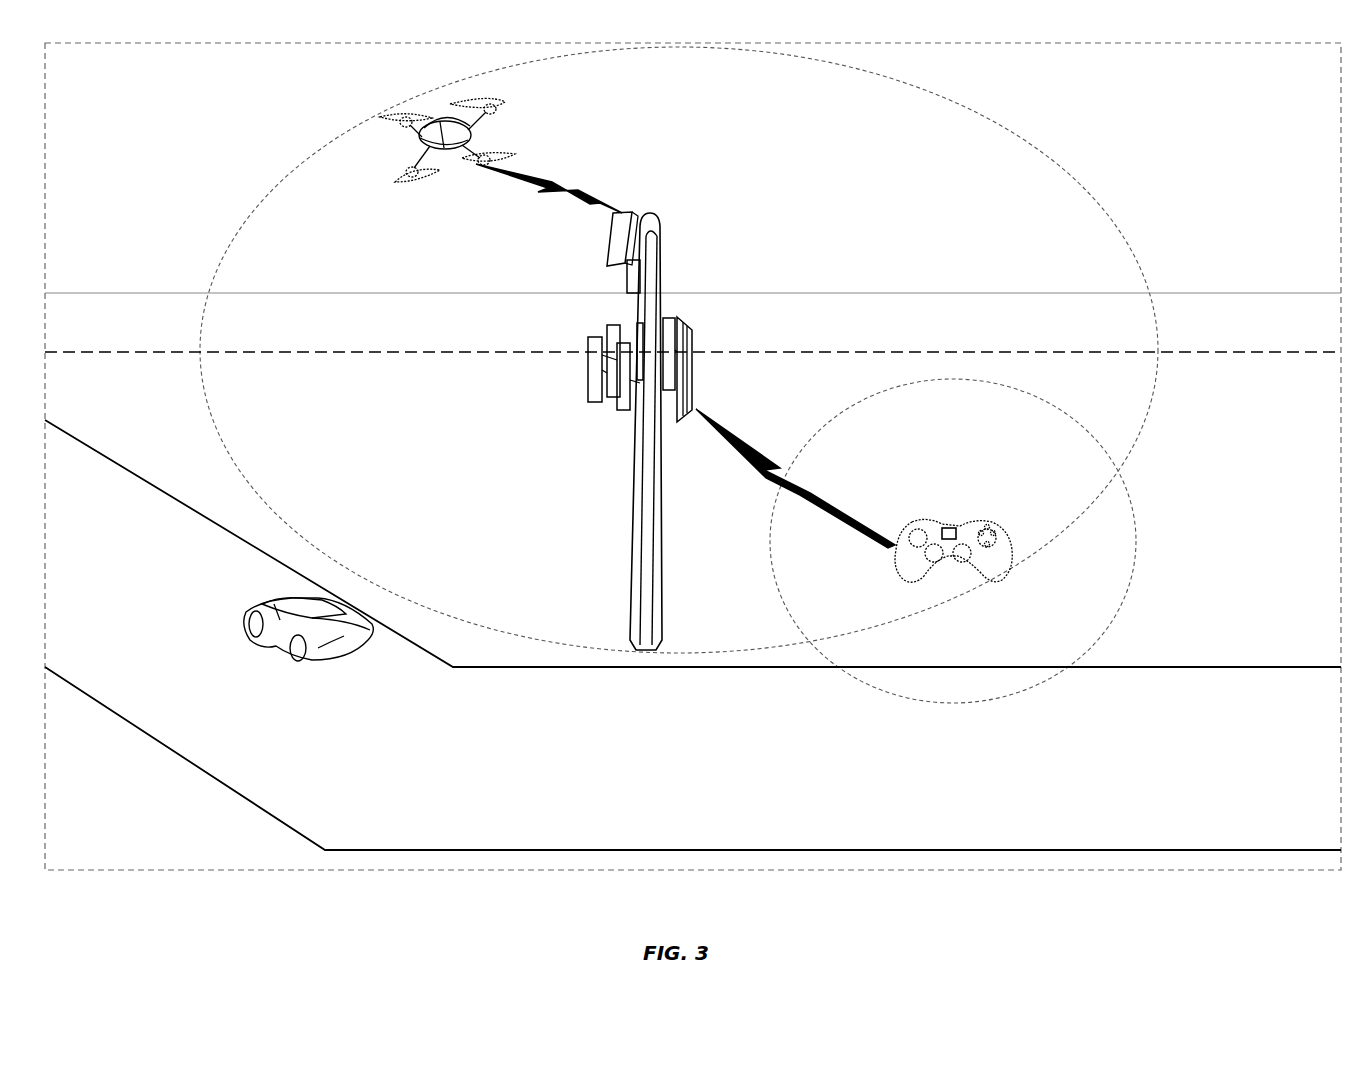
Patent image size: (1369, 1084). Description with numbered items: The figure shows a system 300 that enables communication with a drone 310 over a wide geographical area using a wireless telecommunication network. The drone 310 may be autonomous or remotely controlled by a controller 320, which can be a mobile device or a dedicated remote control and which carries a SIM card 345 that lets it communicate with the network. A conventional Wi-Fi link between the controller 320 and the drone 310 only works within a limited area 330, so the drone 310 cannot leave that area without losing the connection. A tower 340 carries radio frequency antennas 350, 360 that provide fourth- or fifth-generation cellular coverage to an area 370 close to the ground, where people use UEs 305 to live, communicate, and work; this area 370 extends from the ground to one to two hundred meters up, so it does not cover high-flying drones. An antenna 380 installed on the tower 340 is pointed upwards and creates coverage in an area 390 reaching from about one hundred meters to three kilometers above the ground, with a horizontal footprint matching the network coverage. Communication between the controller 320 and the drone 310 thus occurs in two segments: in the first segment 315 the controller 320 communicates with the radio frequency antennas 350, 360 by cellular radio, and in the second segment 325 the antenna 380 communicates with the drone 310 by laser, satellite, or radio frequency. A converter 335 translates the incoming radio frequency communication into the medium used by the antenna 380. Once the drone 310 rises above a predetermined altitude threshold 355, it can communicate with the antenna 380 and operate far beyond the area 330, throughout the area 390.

The system 300 is at (292, 188).
The UE 305 is at (252, 607).
The drone 310 is at (532, 143).
The first segment 315 is at (754, 440).
The controller 320 is at (986, 515).
The second segment 325 is at (564, 182).
The area 330 is at (957, 382).
The converter 335 is at (622, 287).
The tower 340 is at (665, 242).
The SIM card 345 is at (947, 528).
The radio frequency antenna 350 is at (694, 346).
The predetermined altitude threshold 355 is at (1210, 350).
The radio frequency antenna 360 is at (588, 363).
The area 370 is at (132, 292).
The antenna 380 is at (602, 256).
The area 390 is at (1341, 165).